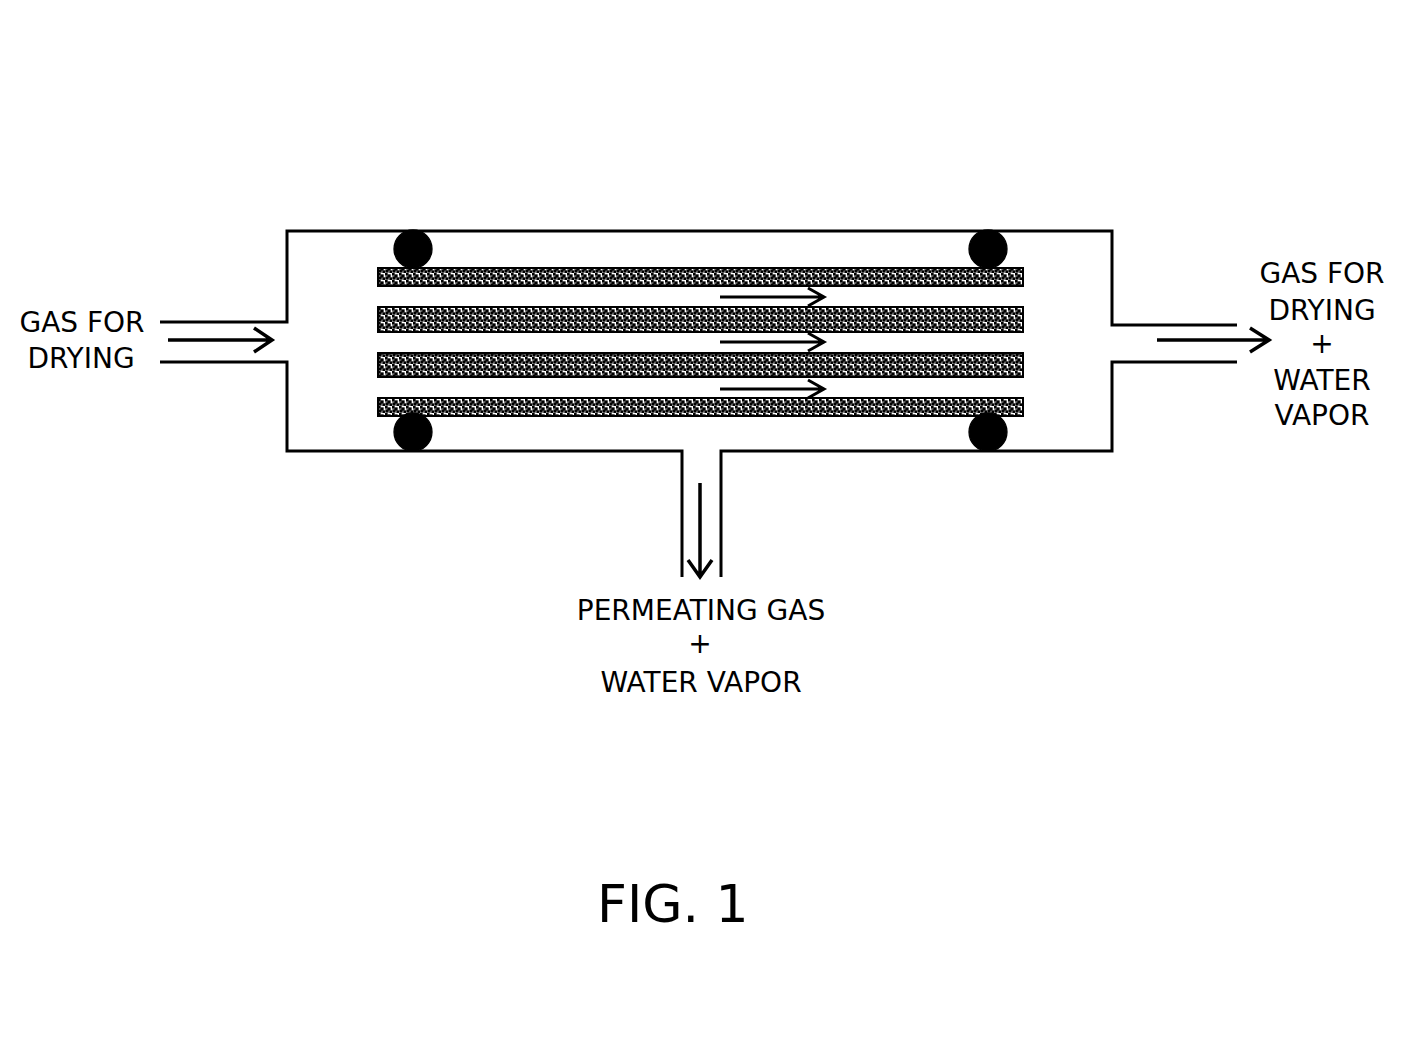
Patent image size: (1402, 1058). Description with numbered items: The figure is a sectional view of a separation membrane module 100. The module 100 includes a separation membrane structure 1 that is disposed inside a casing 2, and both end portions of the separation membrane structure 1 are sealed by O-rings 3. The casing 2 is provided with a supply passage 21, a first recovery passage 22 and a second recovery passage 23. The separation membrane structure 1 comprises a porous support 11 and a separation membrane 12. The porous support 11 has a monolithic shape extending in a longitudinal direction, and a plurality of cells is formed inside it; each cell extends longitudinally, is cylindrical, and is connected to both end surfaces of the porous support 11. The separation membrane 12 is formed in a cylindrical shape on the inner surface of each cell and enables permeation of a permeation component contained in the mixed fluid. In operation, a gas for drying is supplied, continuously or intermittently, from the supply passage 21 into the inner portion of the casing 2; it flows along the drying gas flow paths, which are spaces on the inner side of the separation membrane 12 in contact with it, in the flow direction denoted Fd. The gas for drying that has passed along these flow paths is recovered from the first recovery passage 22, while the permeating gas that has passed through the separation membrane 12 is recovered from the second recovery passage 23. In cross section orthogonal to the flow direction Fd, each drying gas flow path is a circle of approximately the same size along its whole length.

The separation membrane module 100 is at (714, 302).
The separation membrane structure 1 is at (700, 336).
The casing 2 is at (640, 232).
The O-ring 3 is at (393, 232).
The porous support 11 is at (520, 416).
The separation membrane 12 is at (582, 394).
The supply passage 21 is at (210, 322).
The first recovery passage 22 is at (1180, 325).
The second recovery passage 23 is at (722, 496).
The flow direction of the gas for drying Fd is at (738, 389).